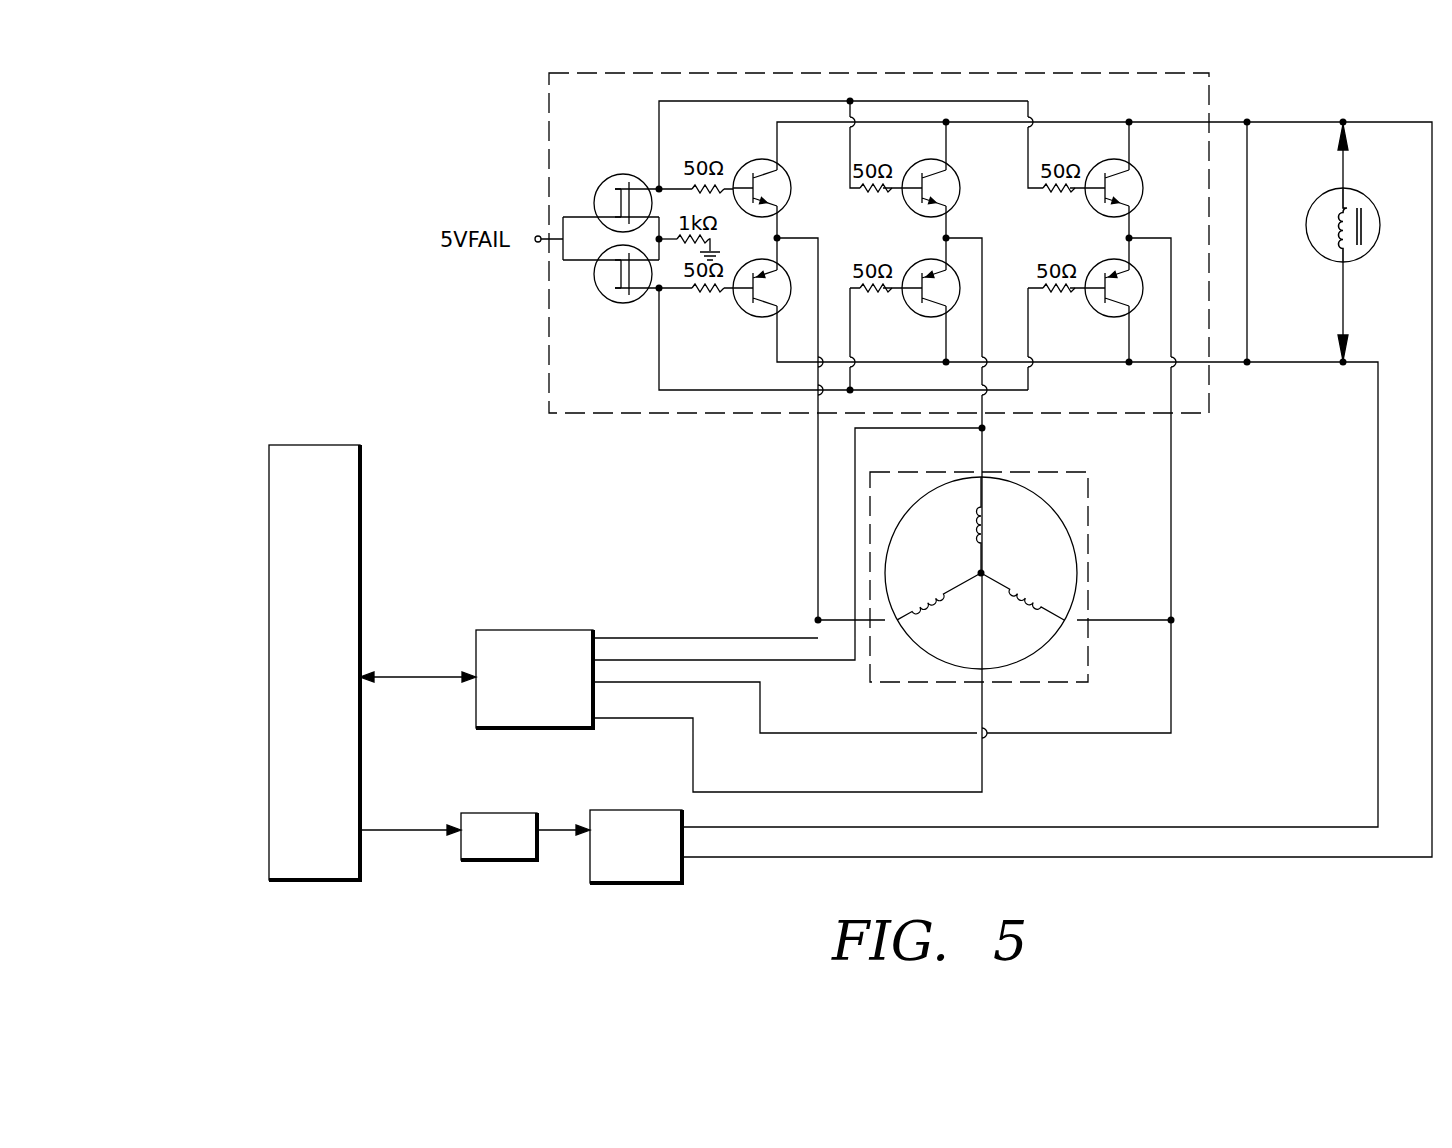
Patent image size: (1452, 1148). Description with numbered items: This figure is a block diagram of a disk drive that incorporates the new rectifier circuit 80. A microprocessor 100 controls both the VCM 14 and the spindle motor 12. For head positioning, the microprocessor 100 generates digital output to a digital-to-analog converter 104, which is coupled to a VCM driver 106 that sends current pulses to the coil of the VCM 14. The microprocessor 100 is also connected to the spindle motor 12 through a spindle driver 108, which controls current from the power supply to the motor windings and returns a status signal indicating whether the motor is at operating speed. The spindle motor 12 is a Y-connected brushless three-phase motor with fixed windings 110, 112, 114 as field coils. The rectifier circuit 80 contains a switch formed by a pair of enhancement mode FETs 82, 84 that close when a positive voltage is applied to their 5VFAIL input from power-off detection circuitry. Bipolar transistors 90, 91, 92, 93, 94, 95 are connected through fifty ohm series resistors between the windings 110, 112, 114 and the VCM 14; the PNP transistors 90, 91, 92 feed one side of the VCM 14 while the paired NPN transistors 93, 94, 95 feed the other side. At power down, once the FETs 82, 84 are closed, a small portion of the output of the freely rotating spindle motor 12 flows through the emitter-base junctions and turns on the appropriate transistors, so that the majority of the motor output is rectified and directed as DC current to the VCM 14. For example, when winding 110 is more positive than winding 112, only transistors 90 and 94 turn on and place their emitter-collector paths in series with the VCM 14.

The spindle motor 12 is at (1022, 585).
The VCM 14 is at (1365, 196).
The rectifier circuit 80 is at (549, 110).
The enhancement mode FET 82 is at (623, 174).
The enhancement mode FET 84 is at (623, 303).
The PNP transistor 90 is at (757, 162).
The PNP transistor 91 is at (922, 162).
The PNP transistor 92 is at (1102, 162).
The NPN transistor 93 is at (760, 316).
The NPN transistor 94 is at (922, 316).
The NPN transistor 95 is at (1104, 316).
The microprocessor 100 is at (269, 588).
The digital-to-analog converter 104 is at (502, 813).
The VCM driver 106 is at (625, 810).
The spindle driver 108 is at (540, 630).
The winding 110 is at (943, 612).
The winding 112 is at (985, 524).
The winding 114 is at (1034, 588).